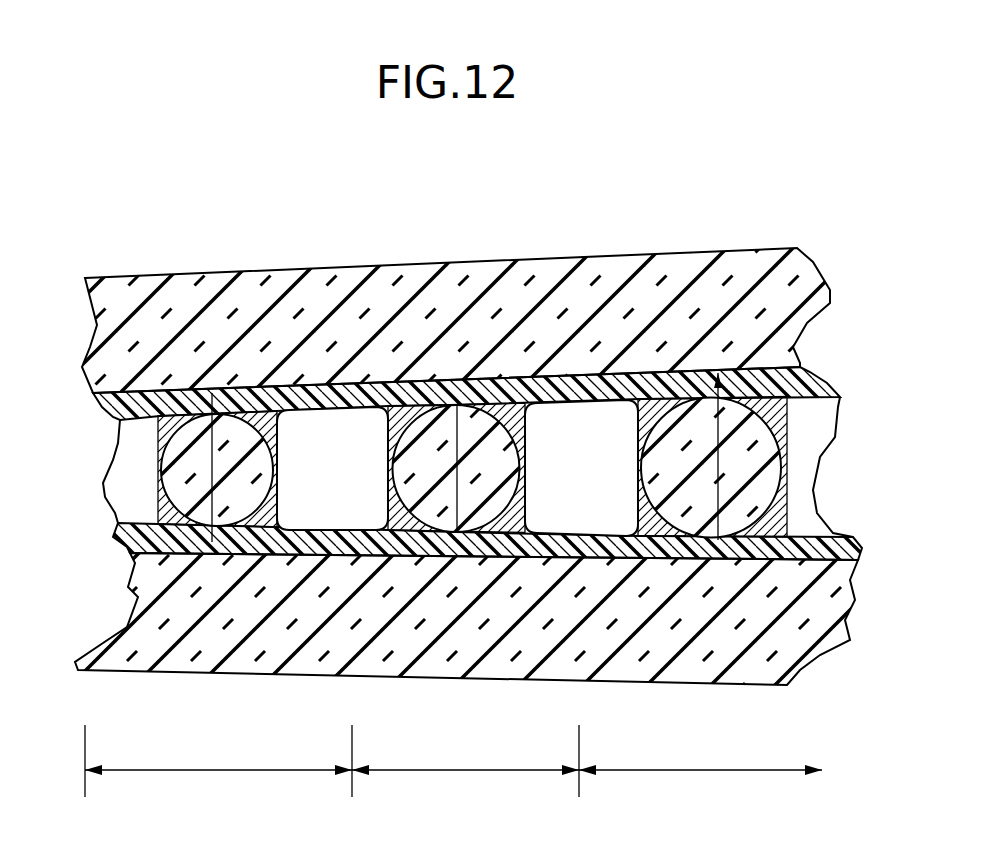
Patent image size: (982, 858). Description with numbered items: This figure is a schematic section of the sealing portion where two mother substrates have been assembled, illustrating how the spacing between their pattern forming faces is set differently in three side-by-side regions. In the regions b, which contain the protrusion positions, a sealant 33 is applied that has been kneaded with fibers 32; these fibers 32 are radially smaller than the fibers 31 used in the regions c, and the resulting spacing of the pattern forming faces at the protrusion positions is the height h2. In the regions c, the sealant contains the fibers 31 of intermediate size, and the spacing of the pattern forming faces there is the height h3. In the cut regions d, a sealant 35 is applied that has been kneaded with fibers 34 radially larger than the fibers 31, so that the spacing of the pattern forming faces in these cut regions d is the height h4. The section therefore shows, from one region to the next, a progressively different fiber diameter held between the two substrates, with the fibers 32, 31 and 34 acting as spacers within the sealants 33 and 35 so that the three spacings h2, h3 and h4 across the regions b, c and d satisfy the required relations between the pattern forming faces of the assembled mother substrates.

The fibers 31 is at (472, 425).
The fibers 32 is at (230, 425).
The sealant 33 is at (172, 398).
The fibers 34 is at (740, 415).
The sealant 35 is at (660, 378).
The spacing of the pattern forming faces at the protrusion positions h2 is at (208, 472).
The spacing of the pattern forming faces in the regions c h3 is at (463, 462).
The spacing of the pattern forming faces in the cut regions h4 is at (724, 463).
The regions b is at (218, 761).
The regions c is at (465, 761).
The cut regions d is at (700, 754).